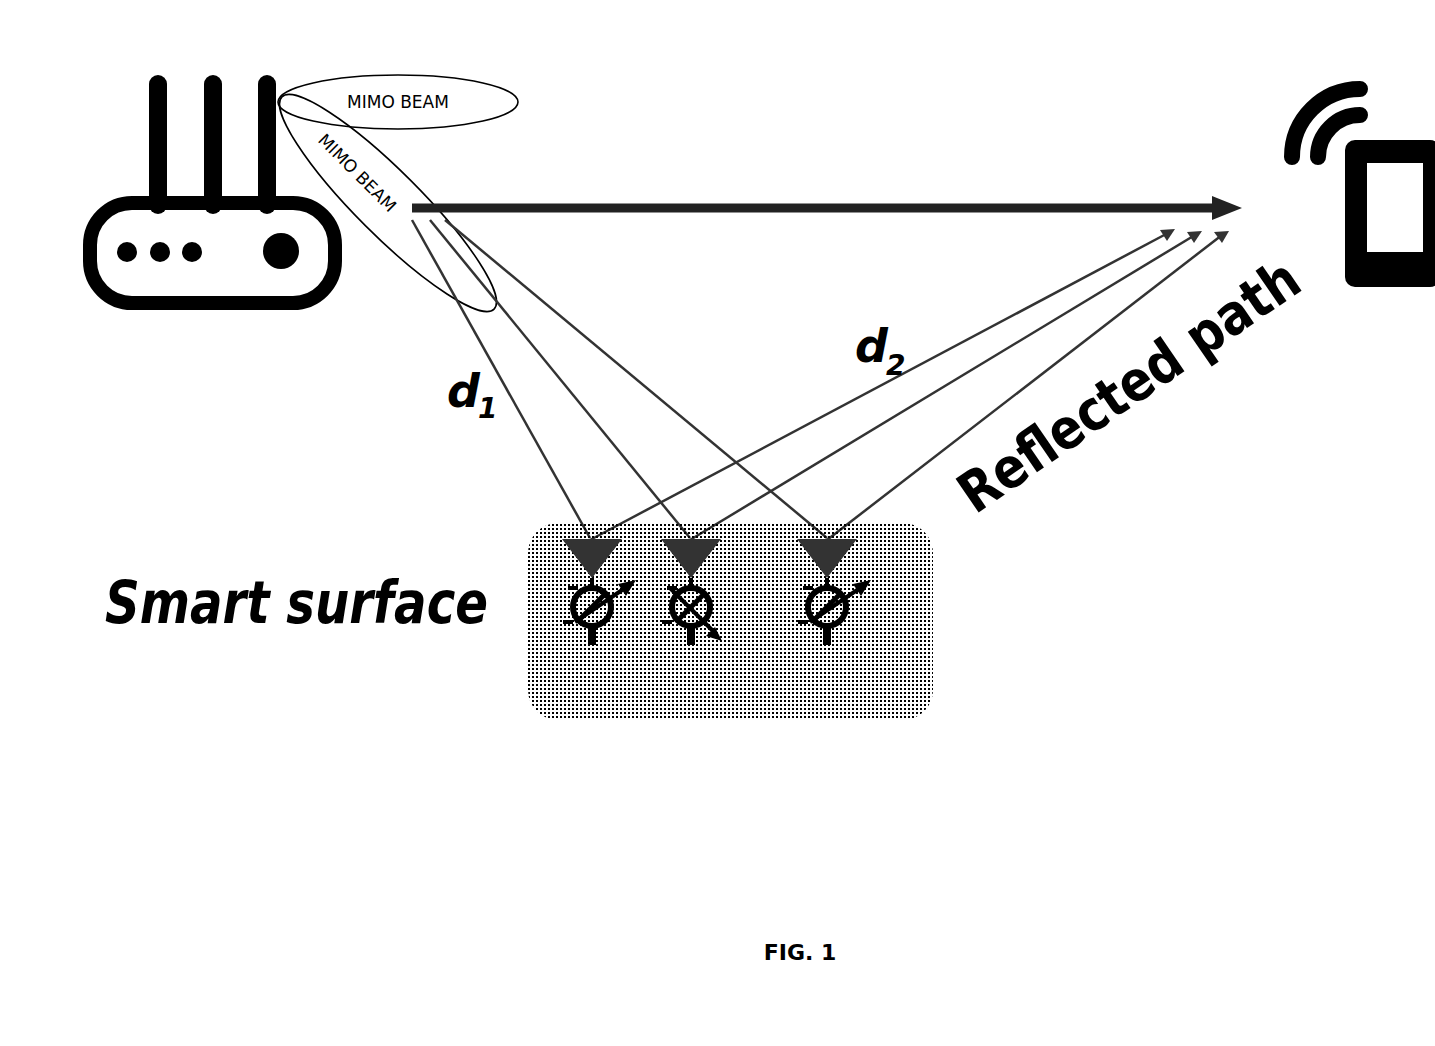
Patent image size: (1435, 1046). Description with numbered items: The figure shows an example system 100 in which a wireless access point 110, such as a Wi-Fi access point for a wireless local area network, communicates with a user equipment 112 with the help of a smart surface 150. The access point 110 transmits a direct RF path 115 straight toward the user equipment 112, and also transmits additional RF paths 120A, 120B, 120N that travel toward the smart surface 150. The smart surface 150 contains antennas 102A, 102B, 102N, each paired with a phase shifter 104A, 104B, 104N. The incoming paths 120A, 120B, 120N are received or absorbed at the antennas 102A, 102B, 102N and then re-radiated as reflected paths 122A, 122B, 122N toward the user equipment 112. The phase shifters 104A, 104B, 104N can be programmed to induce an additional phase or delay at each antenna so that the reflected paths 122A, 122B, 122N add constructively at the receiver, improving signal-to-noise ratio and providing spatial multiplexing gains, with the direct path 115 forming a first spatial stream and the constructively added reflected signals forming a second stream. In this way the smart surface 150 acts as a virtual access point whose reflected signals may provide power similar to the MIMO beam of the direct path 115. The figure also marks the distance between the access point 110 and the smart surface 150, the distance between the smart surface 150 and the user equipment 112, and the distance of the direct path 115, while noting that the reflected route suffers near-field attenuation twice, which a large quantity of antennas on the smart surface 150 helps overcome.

The system 100 is at (750, 64).
The wireless access point 110 is at (216, 281).
The user equipment 112 is at (1380, 206).
The direct RF path 115 is at (522, 205).
The RF path 120A is at (557, 483).
The RF path 120B is at (607, 442).
The RF path 120N is at (625, 363).
The reflected path 122A is at (772, 438).
The reflected path 122B is at (800, 473).
The reflected path 122N is at (888, 488).
The antenna 102A is at (565, 546).
The antenna 102B is at (703, 557).
The antenna 102N is at (847, 557).
The phase shifter 104A is at (573, 620).
The phase shifter 104B is at (718, 636).
The phase shifter 104N is at (850, 617).
The smart surface 150 is at (894, 704).